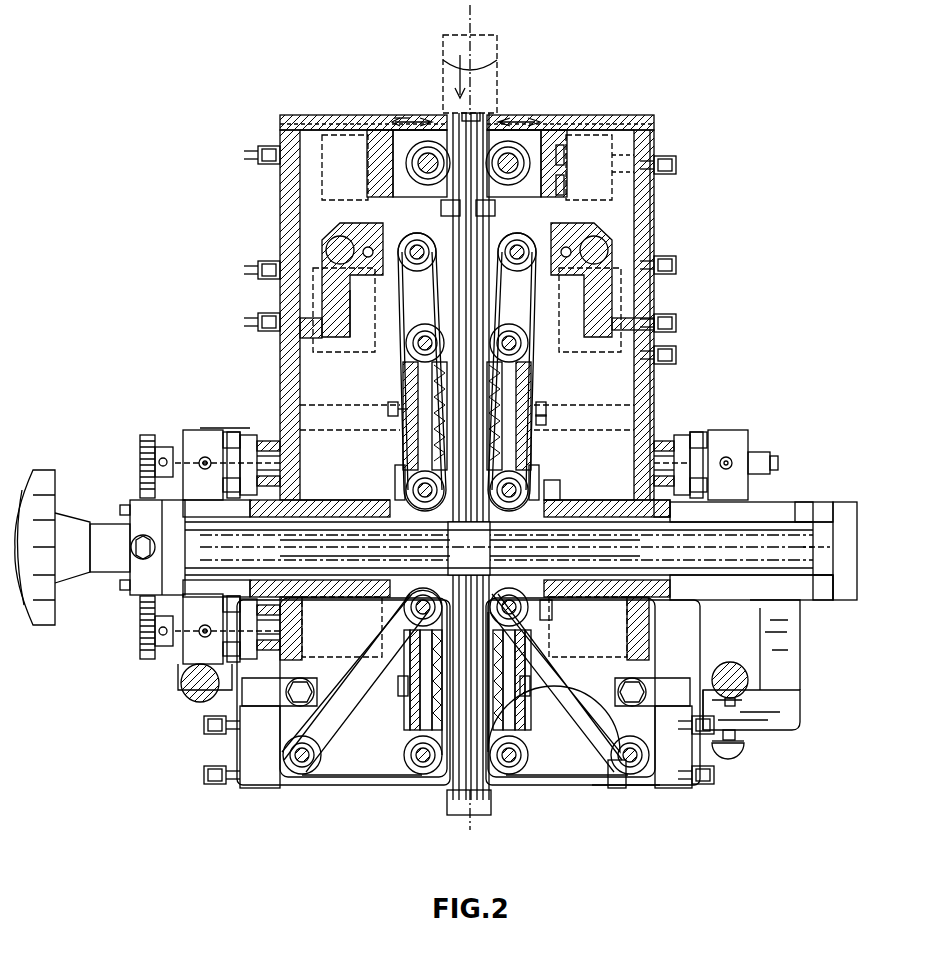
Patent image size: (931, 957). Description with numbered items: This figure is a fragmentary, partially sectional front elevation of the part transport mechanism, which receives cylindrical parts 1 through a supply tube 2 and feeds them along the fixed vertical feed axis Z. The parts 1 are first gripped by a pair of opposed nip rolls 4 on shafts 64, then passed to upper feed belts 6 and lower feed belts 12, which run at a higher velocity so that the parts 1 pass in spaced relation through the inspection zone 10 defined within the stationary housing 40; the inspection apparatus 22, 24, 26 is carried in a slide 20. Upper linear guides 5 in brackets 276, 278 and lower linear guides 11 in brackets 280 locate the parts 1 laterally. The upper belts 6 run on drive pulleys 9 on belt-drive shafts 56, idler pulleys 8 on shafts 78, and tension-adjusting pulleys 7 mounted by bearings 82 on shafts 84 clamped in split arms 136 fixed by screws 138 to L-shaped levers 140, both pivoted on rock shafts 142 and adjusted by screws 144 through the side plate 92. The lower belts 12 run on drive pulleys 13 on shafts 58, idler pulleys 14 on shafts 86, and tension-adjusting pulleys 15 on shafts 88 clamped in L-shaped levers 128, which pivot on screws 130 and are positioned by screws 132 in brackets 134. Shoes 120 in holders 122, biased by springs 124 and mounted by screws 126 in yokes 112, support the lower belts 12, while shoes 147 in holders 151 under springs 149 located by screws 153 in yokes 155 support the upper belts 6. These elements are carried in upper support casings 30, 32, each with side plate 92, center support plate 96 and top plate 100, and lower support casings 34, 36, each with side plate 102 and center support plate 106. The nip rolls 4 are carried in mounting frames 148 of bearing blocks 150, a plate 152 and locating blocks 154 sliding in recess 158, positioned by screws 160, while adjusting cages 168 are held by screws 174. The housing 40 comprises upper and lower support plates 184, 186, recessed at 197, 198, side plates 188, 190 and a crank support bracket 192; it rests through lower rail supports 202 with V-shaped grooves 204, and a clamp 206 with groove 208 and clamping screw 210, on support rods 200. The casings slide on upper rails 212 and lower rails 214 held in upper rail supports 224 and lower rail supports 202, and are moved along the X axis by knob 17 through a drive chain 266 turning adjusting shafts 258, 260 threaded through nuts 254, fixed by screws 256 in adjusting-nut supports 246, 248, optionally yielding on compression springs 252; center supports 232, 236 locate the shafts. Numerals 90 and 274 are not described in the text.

The feed axis Z is at (466, 45).
The cylindrical parts 1 is at (497, 62).
The supply tube 2 is at (443, 82).
The nip rolls 4 is at (420, 120).
The upper linear guides 5 is at (471, 443).
The upper feed belts 6 is at (400, 307).
The tension-adjusting pulleys 7 is at (566, 272).
The idler pulleys 8 is at (510, 277).
The drive pulleys 9 is at (538, 472).
The inspection zone 10 is at (528, 558).
The lower linear guides 11 is at (466, 802).
The lower feed belts 12 is at (334, 698).
The drive pulleys 13 is at (542, 608).
The idler pulleys 14 is at (525, 755).
The tension-adjusting pulleys 15 is at (610, 762).
The knob 17 is at (38, 470).
The slide 20 is at (688, 540).
The inspection apparatus 22 is at (499, 533).
The inspection apparatus 24 is at (373, 540).
The inspection apparatus 26 is at (373, 564).
The upper support casing 30 is at (270, 138).
The upper support casing 32 is at (606, 106).
The lower support casing 34 is at (346, 798).
The lower support casing 36 is at (590, 802).
The housing 40 is at (782, 492).
The belt-drive shafts 56 is at (418, 492).
The belt-drive shafts 58 is at (416, 608).
The shafts 64 is at (432, 168).
The shafts 78 is at (540, 402).
The bearings 82 is at (425, 328).
The shafts 84 is at (417, 265).
The shafts 86 is at (518, 722).
The tension-adjusting shafts 88 is at (622, 790).
The plate 90 is at (660, 788).
The side plate 92 is at (655, 302).
The center support plate 96 is at (336, 430).
The top plate 100 is at (415, 116).
The side plate 102 is at (300, 652).
The center support plate 106 is at (378, 788).
The shoe support yoke 112 is at (410, 652).
The shoes 120 is at (426, 714).
The holders 122 is at (432, 702).
The springs 124 is at (522, 710).
The screws 126 is at (398, 688).
The L-shaped levers 128 is at (266, 788).
The screws 130 is at (583, 702).
The screws 132 is at (694, 770).
The brackets 134 is at (672, 788).
The split arms 136 is at (398, 270).
The screws 138 is at (360, 230).
The L-shaped levers 140 is at (322, 297).
The rock shafts 142 is at (325, 245).
The screws 144 is at (676, 318).
The shoes 147 is at (505, 442).
The mounting frames 148 is at (570, 158).
The springs 149 is at (405, 432).
The bearing blocks 150 is at (480, 115).
The holders 151 is at (530, 432).
The plate 152 is at (620, 172).
The screws 153 is at (388, 410).
The locating blocks 154 is at (620, 118).
The yokes 155 is at (560, 406).
The recess 158 is at (375, 118).
The screws 160 is at (678, 164).
The adjusting cage 168 is at (320, 362).
The screws 174 is at (676, 262).
The upper support plate 184 is at (806, 503).
The lower support plate 186 is at (810, 602).
The side plate 188 is at (166, 600).
The side plate 190 is at (855, 522).
The crank support bracket 192 is at (131, 500).
The recess 197 is at (562, 490).
The recess 198 is at (588, 626).
The support rods 200 is at (196, 702).
The lower rail supports 202 is at (180, 670).
The V-shaped grooves 204 is at (798, 692).
The clamp 206 is at (798, 717).
The V-shaped groove 208 is at (738, 702).
The clamping screw 210 is at (740, 754).
The upper rails 212 is at (265, 440).
The lower rails 214 is at (302, 610).
The upper rail supports 224 is at (182, 440).
The center support 232 is at (530, 686).
The center support 236 is at (432, 442).
The upper adjusting-nut supports 246 is at (678, 507).
The lower adjusting-nut supports 248 is at (686, 602).
The compression springs 252 is at (654, 440).
The adjusting nuts 254 is at (222, 432).
The screws 256 is at (230, 434).
The adjusting shaft 258 is at (143, 435).
The adjusting shaft 260 is at (178, 674).
The drive chain 266 is at (140, 657).
The dashed line 274 is at (220, 430).
The brackets 276 is at (496, 208).
The brackets 278 is at (547, 420).
The brackets 280 is at (408, 750).
The X axis X is at (818, 552).